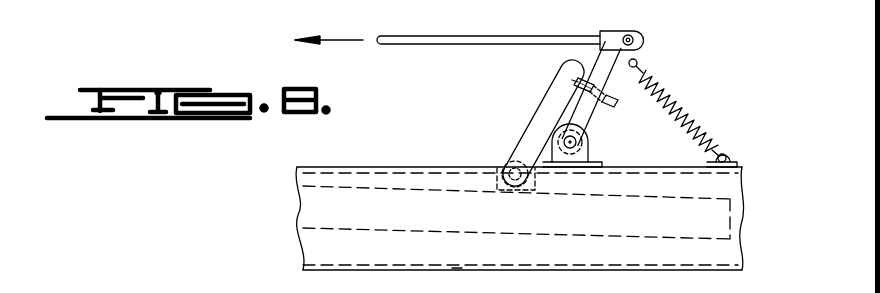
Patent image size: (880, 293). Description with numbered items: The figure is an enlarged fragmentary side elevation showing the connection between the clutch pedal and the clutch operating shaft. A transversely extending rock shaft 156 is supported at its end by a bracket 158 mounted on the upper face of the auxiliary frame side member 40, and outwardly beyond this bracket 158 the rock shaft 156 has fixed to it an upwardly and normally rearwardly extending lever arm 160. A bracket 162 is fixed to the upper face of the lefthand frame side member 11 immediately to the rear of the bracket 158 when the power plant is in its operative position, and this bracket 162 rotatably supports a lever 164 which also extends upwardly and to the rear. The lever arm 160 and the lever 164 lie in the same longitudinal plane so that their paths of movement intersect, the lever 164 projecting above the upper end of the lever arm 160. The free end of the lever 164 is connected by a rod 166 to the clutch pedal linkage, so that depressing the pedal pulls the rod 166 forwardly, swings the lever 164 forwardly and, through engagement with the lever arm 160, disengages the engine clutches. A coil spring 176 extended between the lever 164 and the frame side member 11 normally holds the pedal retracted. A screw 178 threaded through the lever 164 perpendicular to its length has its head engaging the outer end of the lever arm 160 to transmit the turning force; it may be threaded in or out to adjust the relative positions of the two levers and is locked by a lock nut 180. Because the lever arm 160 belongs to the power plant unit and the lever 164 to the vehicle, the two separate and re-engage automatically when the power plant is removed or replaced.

The auxiliary frame side member 40 is at (296, 232).
The frame side member 11 is at (458, 268).
The rock shaft 156 is at (498, 190).
The bracket 158 is at (504, 168).
The lever arm 160 is at (541, 113).
The bracket 162 is at (595, 148).
The lever 164 is at (639, 52).
The rod 166 is at (455, 36).
The coil spring 176 is at (692, 113).
The screw 178 is at (606, 104).
The lock nut 180 is at (586, 78).